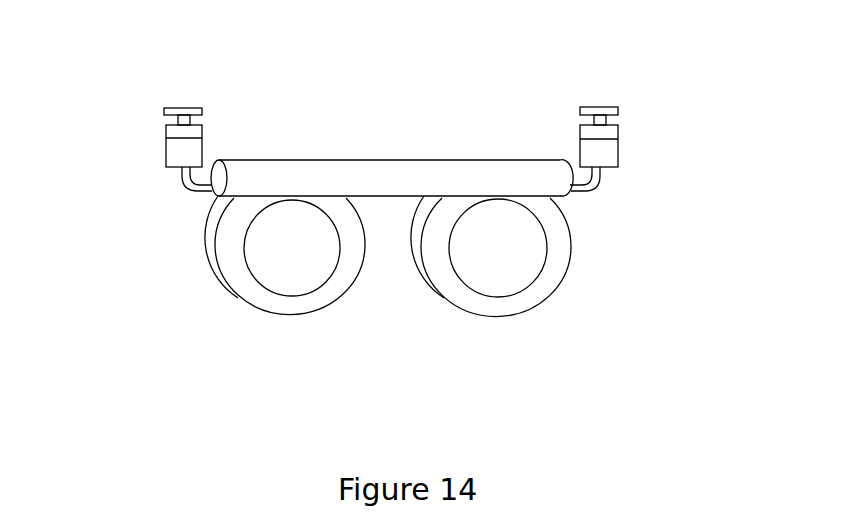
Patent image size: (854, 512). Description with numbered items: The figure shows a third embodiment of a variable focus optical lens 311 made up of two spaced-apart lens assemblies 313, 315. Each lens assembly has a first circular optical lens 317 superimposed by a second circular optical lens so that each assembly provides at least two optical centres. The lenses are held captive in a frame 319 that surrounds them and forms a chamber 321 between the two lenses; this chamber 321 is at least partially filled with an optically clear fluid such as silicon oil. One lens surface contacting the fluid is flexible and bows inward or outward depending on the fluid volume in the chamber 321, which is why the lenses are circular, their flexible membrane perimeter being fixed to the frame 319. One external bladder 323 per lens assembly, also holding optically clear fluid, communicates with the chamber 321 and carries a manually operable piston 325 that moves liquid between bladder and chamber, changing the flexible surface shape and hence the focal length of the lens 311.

The variable focus optical lens 311 is at (134, 67).
The lens assembly 313 is at (284, 355).
The lens assembly 315 is at (492, 355).
The first circular optical lens 317 is at (277, 262).
The frame 319 is at (310, 160).
The chamber 321 is at (232, 242).
The external bladder 323 is at (605, 149).
The manually operable piston 325 is at (612, 113).